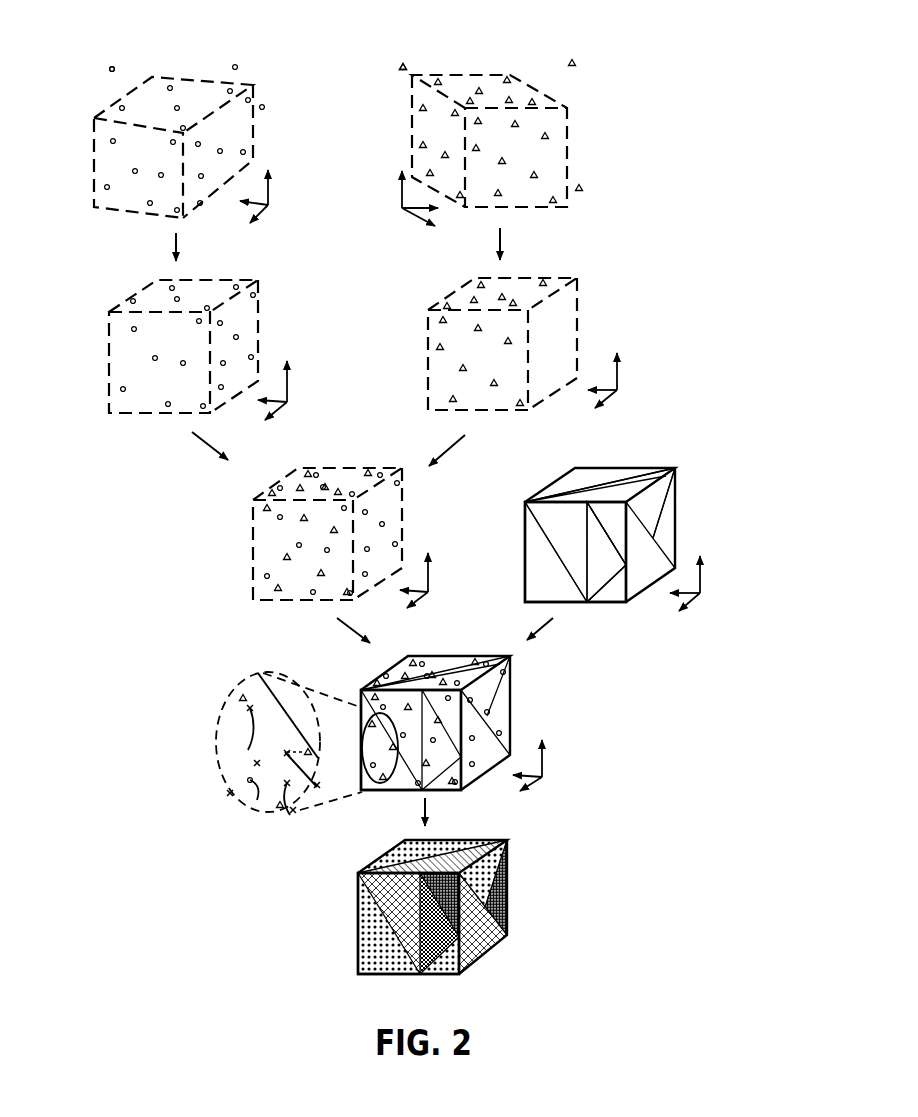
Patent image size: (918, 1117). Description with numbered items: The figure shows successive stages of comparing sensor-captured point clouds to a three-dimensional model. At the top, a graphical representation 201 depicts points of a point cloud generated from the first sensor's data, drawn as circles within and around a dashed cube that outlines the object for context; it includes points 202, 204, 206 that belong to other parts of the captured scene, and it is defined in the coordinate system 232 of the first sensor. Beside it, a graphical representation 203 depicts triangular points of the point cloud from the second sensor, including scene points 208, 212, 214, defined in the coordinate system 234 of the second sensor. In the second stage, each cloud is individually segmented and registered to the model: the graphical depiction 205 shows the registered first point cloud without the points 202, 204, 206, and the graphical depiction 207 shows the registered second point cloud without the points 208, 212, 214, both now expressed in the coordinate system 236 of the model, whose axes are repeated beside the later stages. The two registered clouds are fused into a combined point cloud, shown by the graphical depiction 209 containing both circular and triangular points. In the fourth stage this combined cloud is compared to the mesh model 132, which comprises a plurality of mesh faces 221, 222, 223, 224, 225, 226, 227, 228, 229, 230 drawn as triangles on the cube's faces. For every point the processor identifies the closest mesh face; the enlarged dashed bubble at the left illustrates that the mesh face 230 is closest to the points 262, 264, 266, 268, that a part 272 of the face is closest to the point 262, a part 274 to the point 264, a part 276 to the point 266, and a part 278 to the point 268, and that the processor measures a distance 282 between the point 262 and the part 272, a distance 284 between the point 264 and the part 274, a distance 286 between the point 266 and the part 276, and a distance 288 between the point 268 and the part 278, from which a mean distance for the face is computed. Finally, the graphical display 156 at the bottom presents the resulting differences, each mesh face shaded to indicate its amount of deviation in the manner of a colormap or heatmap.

The mesh model 132 is at (554, 470).
The graphical display 156 is at (349, 910).
The graphical representation of points of the second 3D point cloud 201 is at (115, 47).
The point 202 is at (239, 61).
The graphical representation of points of the third 3D point cloud 203 is at (590, 45).
The point 204 is at (265, 104).
The graphical depiction of the registered first 3D point cloud 205 is at (142, 282).
The point 206 is at (103, 71).
The graphical depiction of the registered second 3D point cloud 207 is at (582, 272).
The point 208 is at (582, 64).
The graphical depiction of the combined 3D point cloud 209 is at (250, 485).
The point 212 is at (584, 184).
The point 214 is at (400, 63).
The mesh face 221 is at (600, 563).
The mesh face 222 is at (623, 521).
The mesh face 223 is at (610, 603).
The mesh face 224 is at (645, 586).
The mesh face 225 is at (678, 520).
The mesh face 226 is at (664, 488).
The mesh face 227 is at (641, 472).
The mesh face 228 is at (590, 465).
The mesh face 229 is at (538, 520).
The mesh face 230 is at (530, 565).
The coordinate system of the first sensor 232 is at (277, 190).
The coordinate system of the second sensor 234 is at (399, 193).
The coordinate system of the 3D model 236 is at (296, 387).
The point 262 is at (240, 689).
The point 264 is at (315, 742).
The point 266 is at (274, 809).
The point 268 is at (246, 775).
The part of the mesh face 272 is at (254, 708).
The part of the mesh face 274 is at (318, 786).
The part of the mesh face 276 is at (293, 801).
The part of the mesh face 278 is at (257, 761).
The distance 282 is at (258, 674).
The distance 284 is at (303, 740).
The distance 286 is at (287, 786).
The distance 288 is at (255, 790).